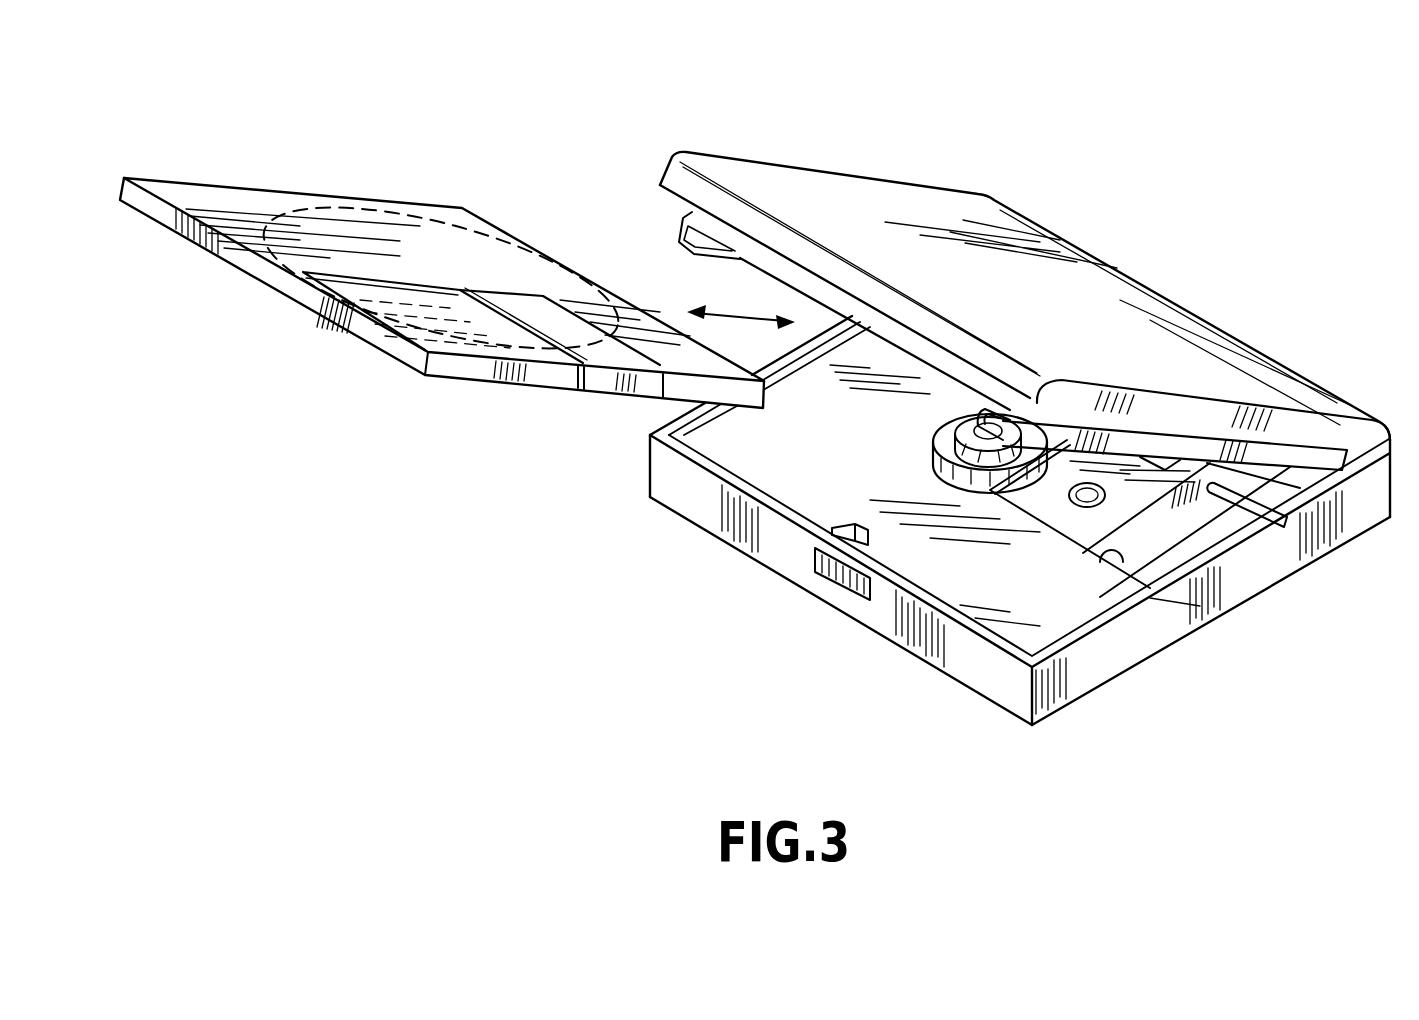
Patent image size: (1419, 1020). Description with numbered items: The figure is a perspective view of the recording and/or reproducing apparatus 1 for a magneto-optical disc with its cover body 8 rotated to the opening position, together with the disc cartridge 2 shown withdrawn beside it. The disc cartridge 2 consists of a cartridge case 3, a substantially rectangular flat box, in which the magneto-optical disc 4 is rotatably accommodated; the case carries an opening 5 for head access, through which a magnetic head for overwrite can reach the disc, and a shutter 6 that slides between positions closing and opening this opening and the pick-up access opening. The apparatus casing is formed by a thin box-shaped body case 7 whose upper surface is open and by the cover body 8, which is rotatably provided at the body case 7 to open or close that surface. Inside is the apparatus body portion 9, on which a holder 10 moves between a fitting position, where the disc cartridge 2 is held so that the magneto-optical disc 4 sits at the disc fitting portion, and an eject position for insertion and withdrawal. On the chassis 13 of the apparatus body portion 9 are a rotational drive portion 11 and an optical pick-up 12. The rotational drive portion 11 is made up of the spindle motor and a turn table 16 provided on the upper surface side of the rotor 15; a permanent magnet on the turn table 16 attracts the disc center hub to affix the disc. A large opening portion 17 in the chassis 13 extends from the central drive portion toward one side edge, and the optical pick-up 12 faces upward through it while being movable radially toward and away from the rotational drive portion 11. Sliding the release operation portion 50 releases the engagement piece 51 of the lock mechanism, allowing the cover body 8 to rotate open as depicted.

The recording and/or reproducing apparatus 1 is at (1215, 292).
The disc cartridge 2 is at (421, 207).
The cartridge case 3 is at (226, 196).
The magneto-optical disc 4 is at (478, 222).
The opening for head access 5 is at (617, 352).
The shutter 6 is at (591, 384).
The body case 7 is at (1092, 678).
The cover body 8 is at (905, 205).
The apparatus body portion 9 is at (1113, 588).
The holder 10 is at (1147, 440).
The rotational drive portion 11 is at (940, 484).
The optical pick-up 12 is at (1127, 495).
The chassis 13 is at (1005, 610).
The rotor 15 is at (945, 420).
The turn table 16 is at (1000, 368).
The opening portion 17 is at (1103, 552).
The release operation portion 50 is at (832, 578).
The engagement piece 51 is at (828, 528).